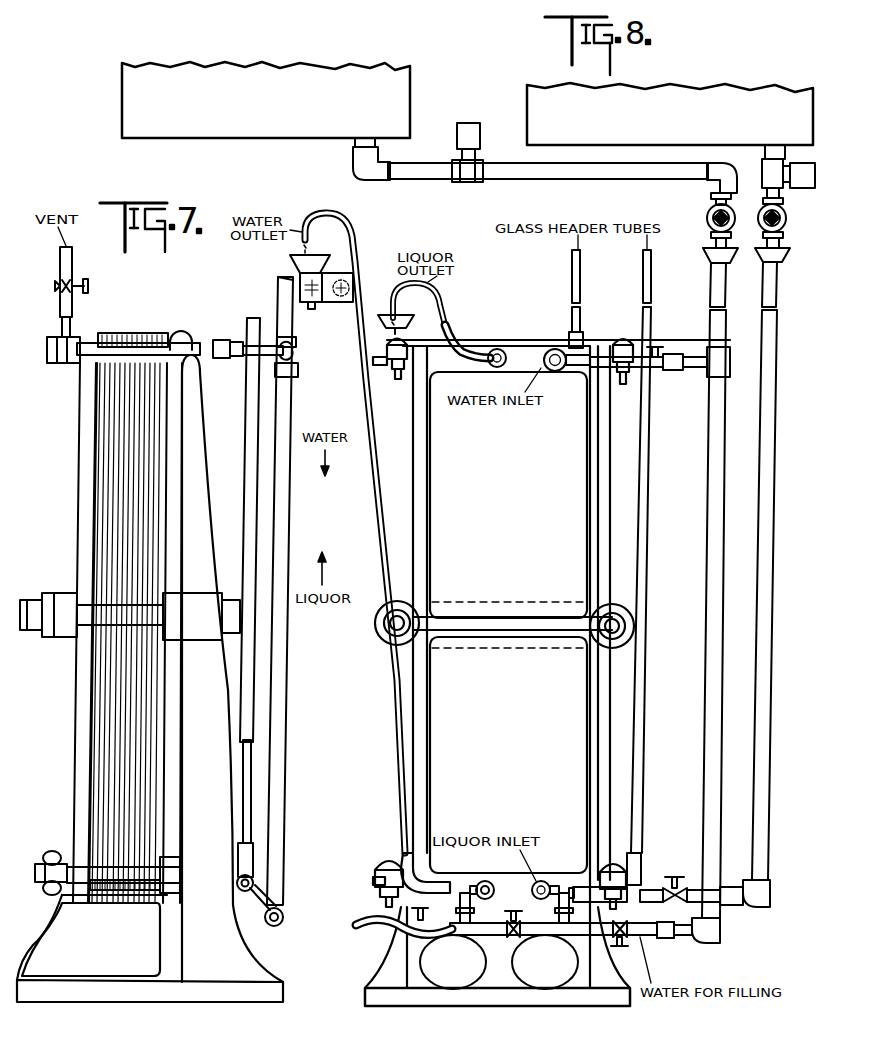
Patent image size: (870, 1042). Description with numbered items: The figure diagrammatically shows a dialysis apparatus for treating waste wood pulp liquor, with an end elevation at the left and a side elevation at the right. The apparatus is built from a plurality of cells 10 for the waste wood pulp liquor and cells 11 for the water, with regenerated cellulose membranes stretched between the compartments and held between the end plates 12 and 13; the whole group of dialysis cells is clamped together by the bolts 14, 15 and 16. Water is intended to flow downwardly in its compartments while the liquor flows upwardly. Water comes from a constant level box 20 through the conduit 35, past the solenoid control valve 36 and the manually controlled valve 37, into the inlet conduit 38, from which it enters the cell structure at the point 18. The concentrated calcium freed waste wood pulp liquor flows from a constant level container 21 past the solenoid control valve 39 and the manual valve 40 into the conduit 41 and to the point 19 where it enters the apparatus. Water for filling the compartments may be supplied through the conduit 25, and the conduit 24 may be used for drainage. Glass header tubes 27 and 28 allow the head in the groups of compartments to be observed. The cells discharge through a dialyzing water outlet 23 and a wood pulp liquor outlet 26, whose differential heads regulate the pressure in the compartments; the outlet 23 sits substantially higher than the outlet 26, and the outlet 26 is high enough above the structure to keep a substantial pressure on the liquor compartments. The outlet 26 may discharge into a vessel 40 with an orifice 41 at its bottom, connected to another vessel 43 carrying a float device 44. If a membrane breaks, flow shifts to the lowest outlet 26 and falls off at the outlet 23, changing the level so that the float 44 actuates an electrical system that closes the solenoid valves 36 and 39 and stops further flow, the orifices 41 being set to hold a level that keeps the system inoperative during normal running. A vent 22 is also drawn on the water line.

In FIG. 7, the cells for waste wood pulp liquor 10 is at (123, 466).
In FIG. 7, the cells for water 11 is at (118, 413).
In FIG. 7, the end plate 12 is at (78, 707).
In FIG. 7, the end plate 13 is at (170, 436).
In FIG. 7, the bolt 14 is at (60, 628).
In FIG. 7, the bolt 15 is at (53, 853).
In FIG. 7, the bolt 16 is at (70, 365).
In FIG. 8, the water entry point 18 is at (559, 372).
In FIG. 8, the liquor entry point 19 is at (543, 881).
In FIG. 8, the constant level box 20 is at (298, 138).
In FIG. 8, the constant level container 21 is at (600, 146).
In FIG. 7, the vent 22 is at (73, 264).
In FIG. 8, the dialyzing water outlet 23 is at (333, 222).
In FIG. 8, the conduit 24 is at (360, 926).
In FIG. 8, the conduit 25 is at (664, 940).
In FIG. 8, the wood pulp liquor outlet 26 is at (437, 296).
In FIG. 8, the glass header tube 27 is at (572, 273).
In FIG. 8, the glass header tube 28 is at (643, 278).
In FIG. 8, the conduit 35 is at (557, 178).
In FIG. 8, the solenoid control valve 36 is at (465, 182).
In FIG. 8, the manually controlled valve 37 is at (712, 185).
In FIG. 8, the inlet conduit 38 is at (667, 370).
In FIG. 8, the solenoid control valve 39 is at (766, 173).
In FIG. 8, the manual valve / vessel 40 is at (786, 218).
In FIG. 8, the conduit / orifice 41 is at (777, 286).
In FIG. 8, the vessel 43 is at (335, 272).
In FIG. 8, the float device 44 is at (354, 291).